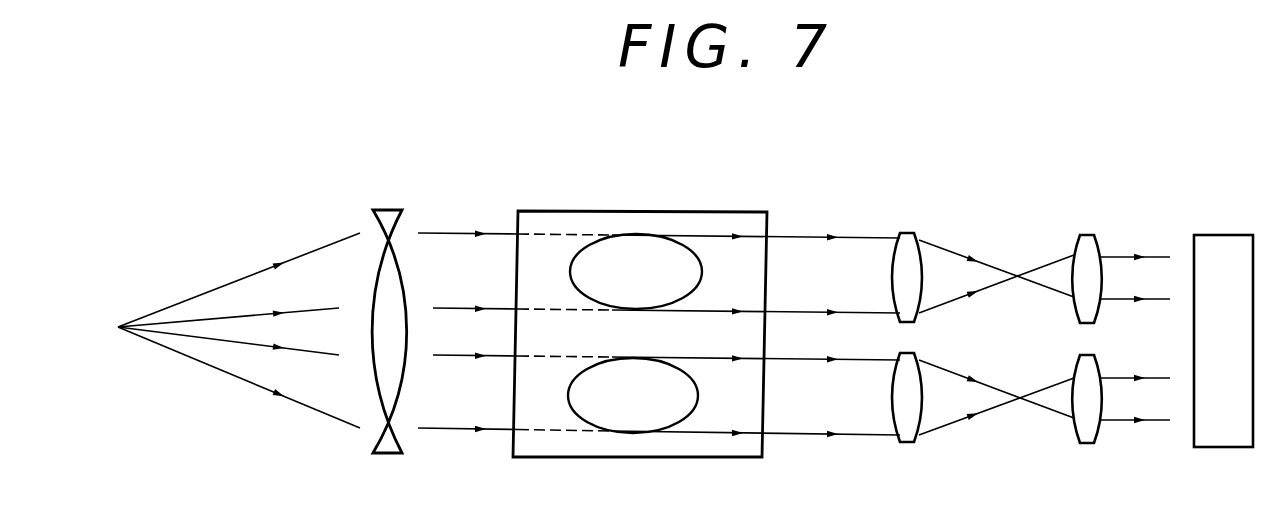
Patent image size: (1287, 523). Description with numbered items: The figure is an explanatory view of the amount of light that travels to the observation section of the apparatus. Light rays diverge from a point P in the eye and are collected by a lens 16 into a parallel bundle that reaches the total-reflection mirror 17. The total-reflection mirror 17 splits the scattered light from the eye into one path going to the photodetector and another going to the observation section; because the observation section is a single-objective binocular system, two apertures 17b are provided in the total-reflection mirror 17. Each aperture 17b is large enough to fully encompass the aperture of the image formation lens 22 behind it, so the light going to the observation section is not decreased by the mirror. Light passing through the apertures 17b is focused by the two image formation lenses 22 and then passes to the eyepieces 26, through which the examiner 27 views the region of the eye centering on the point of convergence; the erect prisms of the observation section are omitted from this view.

The point light source P is at (122, 315).
The objective lens 16 is at (388, 210).
The total-reflection mirror 17 is at (572, 211).
The apertures 17b is at (641, 244).
The image formation lens 22 is at (910, 233).
The eyepiece 26 is at (1090, 235).
The examiner 27 is at (1205, 447).